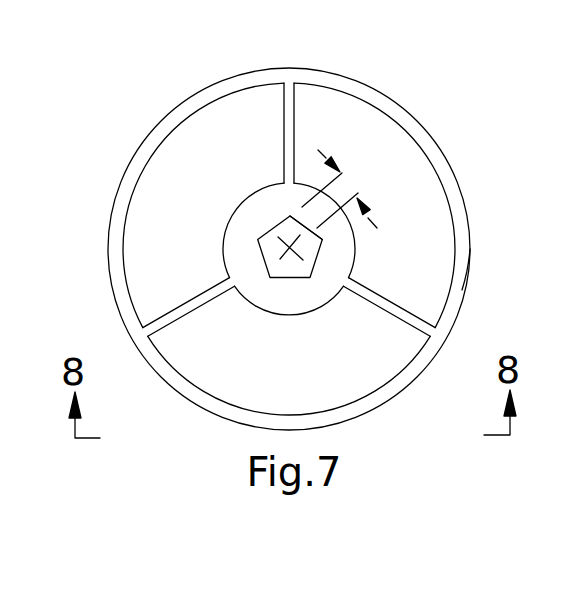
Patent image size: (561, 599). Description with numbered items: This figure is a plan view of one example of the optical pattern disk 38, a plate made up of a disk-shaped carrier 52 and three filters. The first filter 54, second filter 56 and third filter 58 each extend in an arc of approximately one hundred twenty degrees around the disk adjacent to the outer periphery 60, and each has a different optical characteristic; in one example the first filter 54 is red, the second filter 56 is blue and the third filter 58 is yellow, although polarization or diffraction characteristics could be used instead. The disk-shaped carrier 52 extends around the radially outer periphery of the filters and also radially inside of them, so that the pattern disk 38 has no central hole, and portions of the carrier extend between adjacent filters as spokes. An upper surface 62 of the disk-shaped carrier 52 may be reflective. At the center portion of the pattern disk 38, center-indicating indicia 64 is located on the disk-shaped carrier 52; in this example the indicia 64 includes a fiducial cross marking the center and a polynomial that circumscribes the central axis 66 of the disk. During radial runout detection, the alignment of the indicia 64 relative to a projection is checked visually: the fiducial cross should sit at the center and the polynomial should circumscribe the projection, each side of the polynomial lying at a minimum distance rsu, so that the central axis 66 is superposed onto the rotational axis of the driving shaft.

The optical pattern disk 38 is at (380, 77).
The disk-shaped carrier 52 is at (393, 110).
The first filter 54 is at (250, 380).
The second filter 56 is at (413, 220).
The third filter 58 is at (165, 223).
The outer periphery 60 is at (472, 262).
The upper surface of the disk-shaped carrier 62 is at (207, 93).
The center-indicating indicia 64 is at (245, 263).
The central axis 66 is at (288, 241).
The minimum distance rsu is at (347, 188).